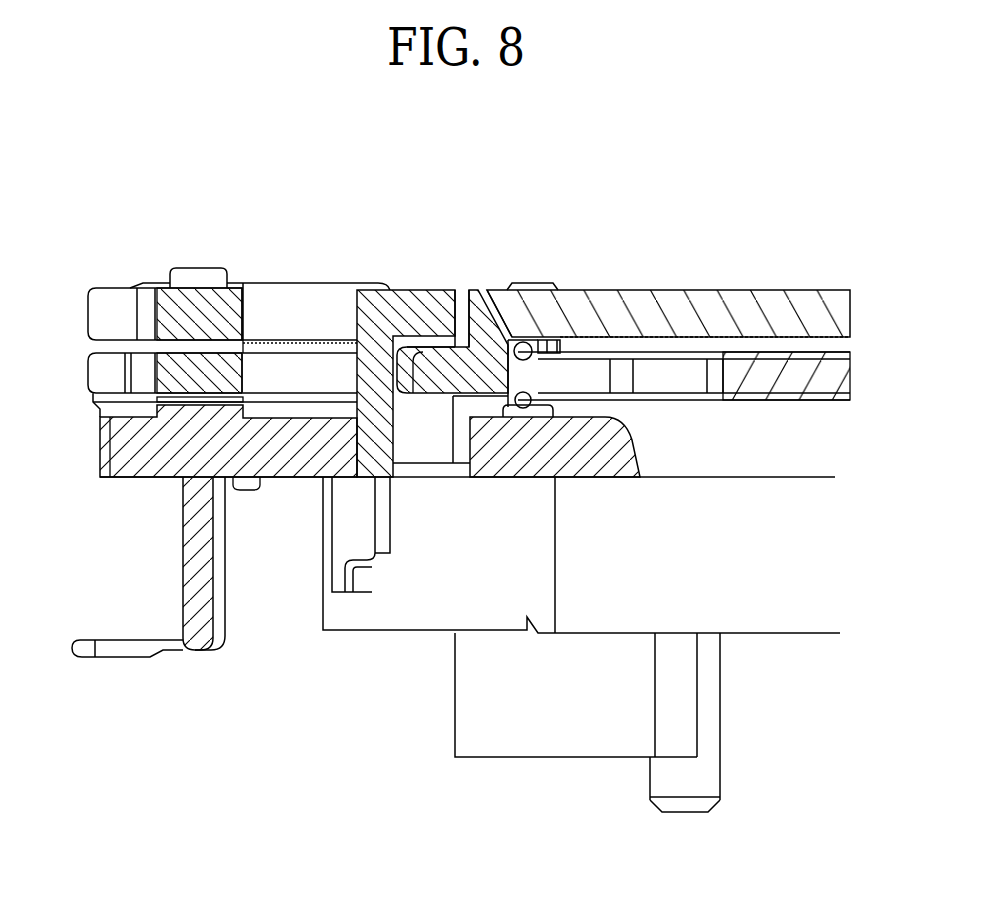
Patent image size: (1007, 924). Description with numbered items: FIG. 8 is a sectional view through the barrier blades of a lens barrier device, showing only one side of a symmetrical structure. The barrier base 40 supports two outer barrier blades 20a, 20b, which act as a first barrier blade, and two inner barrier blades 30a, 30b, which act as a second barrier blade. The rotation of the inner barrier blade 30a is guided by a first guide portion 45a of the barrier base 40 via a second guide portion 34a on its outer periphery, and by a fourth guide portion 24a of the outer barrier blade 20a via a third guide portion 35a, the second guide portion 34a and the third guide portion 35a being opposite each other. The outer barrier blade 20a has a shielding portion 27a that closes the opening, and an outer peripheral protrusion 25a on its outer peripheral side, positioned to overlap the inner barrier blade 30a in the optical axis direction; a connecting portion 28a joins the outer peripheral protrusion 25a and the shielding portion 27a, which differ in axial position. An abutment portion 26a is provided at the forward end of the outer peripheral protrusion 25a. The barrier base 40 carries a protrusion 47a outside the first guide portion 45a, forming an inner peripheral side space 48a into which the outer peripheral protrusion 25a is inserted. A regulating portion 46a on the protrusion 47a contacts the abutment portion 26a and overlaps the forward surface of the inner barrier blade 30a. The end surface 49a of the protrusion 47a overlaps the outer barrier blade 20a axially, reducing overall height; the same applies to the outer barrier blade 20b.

The outer barrier blade 20a is at (806, 308).
The outer barrier blade 20b is at (160, 325).
The fourth guide portion 24a is at (532, 343).
The outer peripheral protrusion 25a is at (453, 335).
The abutment portion 26a is at (355, 313).
The shielding portion 27a is at (745, 312).
The connecting portion 28a is at (480, 335).
The inner barrier blade 30a is at (682, 380).
The inner barrier blade 30b is at (150, 367).
The second guide portion 34a is at (542, 402).
The third guide portion 35a is at (556, 345).
The barrier base 40 is at (157, 452).
The first guide portion 45a is at (515, 418).
The regulating portion 46a is at (387, 288).
The protrusion 47a is at (423, 335).
The inner peripheral side space 48a is at (467, 405).
The end surface 49a is at (410, 300).